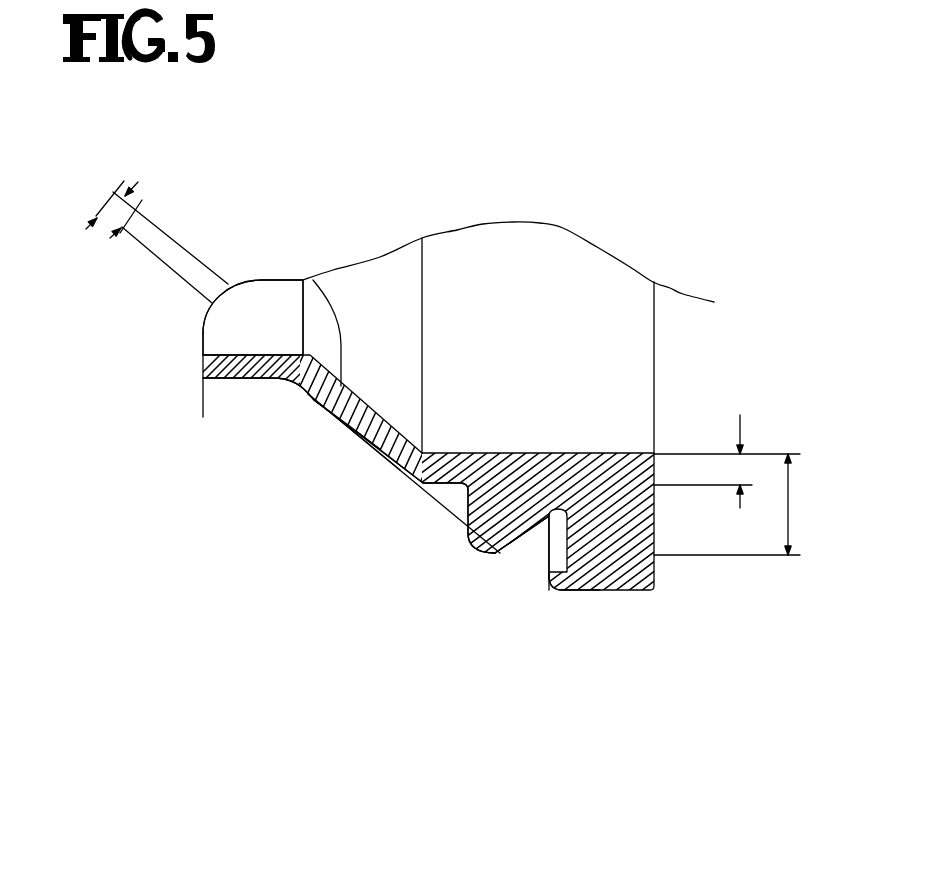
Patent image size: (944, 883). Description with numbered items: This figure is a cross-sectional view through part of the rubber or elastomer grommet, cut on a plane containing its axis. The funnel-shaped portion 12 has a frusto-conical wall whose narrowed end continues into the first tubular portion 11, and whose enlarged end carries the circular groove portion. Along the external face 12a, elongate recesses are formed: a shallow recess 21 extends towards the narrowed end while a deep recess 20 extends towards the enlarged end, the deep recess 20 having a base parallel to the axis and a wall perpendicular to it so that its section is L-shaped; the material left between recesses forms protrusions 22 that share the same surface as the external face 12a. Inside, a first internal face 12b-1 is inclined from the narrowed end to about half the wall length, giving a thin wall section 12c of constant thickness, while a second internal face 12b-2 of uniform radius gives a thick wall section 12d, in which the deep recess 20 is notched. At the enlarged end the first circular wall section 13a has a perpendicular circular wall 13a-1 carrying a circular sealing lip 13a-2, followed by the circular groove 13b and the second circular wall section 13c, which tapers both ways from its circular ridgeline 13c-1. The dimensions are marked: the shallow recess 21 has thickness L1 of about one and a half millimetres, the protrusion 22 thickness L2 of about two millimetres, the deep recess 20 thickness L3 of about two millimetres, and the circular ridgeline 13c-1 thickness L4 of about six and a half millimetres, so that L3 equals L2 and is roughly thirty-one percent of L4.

The first tubular portion 11 is at (235, 375).
The funnel-shaped portion 12 is at (380, 290).
The external face 12a is at (312, 402).
The first internal face 12b-1 is at (313, 280).
The second internal face 12b-2 is at (462, 452).
The thin wall section 12c is at (386, 455).
The thick wall section 12d is at (480, 540).
The deep recess 20 is at (445, 508).
The shallow recess 21 is at (347, 423).
The protrusion 22 is at (368, 436).
The first circular wall section 13a is at (620, 570).
The perpendicular circular wall 13a-1 is at (550, 585).
The circular sealing lip 13a-2 is at (560, 593).
The circular groove 13b is at (538, 542).
The second circular wall section 13c is at (533, 540).
The circular ridgeline 13c-1 is at (503, 557).
The thickness of the shallow recess L1 is at (142, 203).
The thickness of the protrusion L2 is at (110, 207).
The thickness of the deep recess L3 is at (727, 458).
The thickness of the circular ridgeline L4 is at (738, 504).